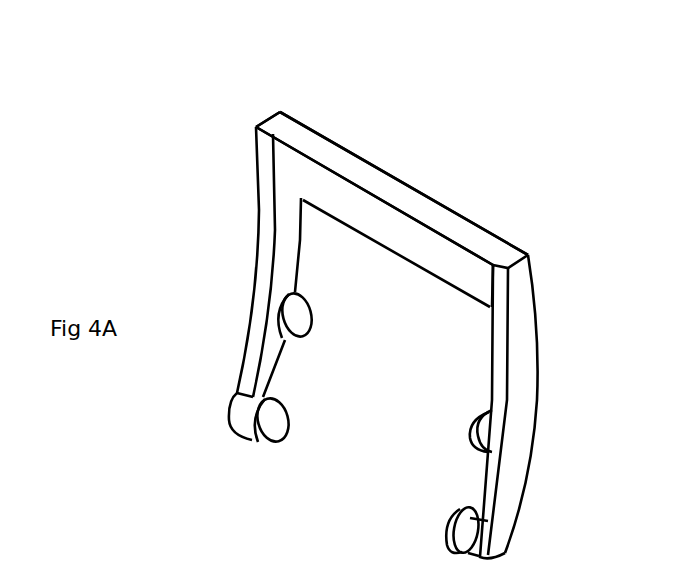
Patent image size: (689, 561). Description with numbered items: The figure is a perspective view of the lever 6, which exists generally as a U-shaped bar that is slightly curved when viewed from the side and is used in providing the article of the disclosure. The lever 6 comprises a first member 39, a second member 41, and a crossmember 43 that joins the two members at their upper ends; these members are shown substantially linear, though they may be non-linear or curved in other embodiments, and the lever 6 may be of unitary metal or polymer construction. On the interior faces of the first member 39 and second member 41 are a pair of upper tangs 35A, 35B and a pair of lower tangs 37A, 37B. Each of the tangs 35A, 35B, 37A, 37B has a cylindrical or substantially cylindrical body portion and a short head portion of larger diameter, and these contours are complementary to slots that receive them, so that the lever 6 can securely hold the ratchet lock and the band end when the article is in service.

The lever 6 is at (430, 175).
The crossmember 43 is at (364, 178).
The first member 39 is at (265, 215).
The second member 41 is at (525, 302).
The upper tang 35A is at (298, 317).
The upper tang 35B is at (480, 415).
The lower tang 37A is at (268, 423).
The lower tang 37B is at (452, 517).